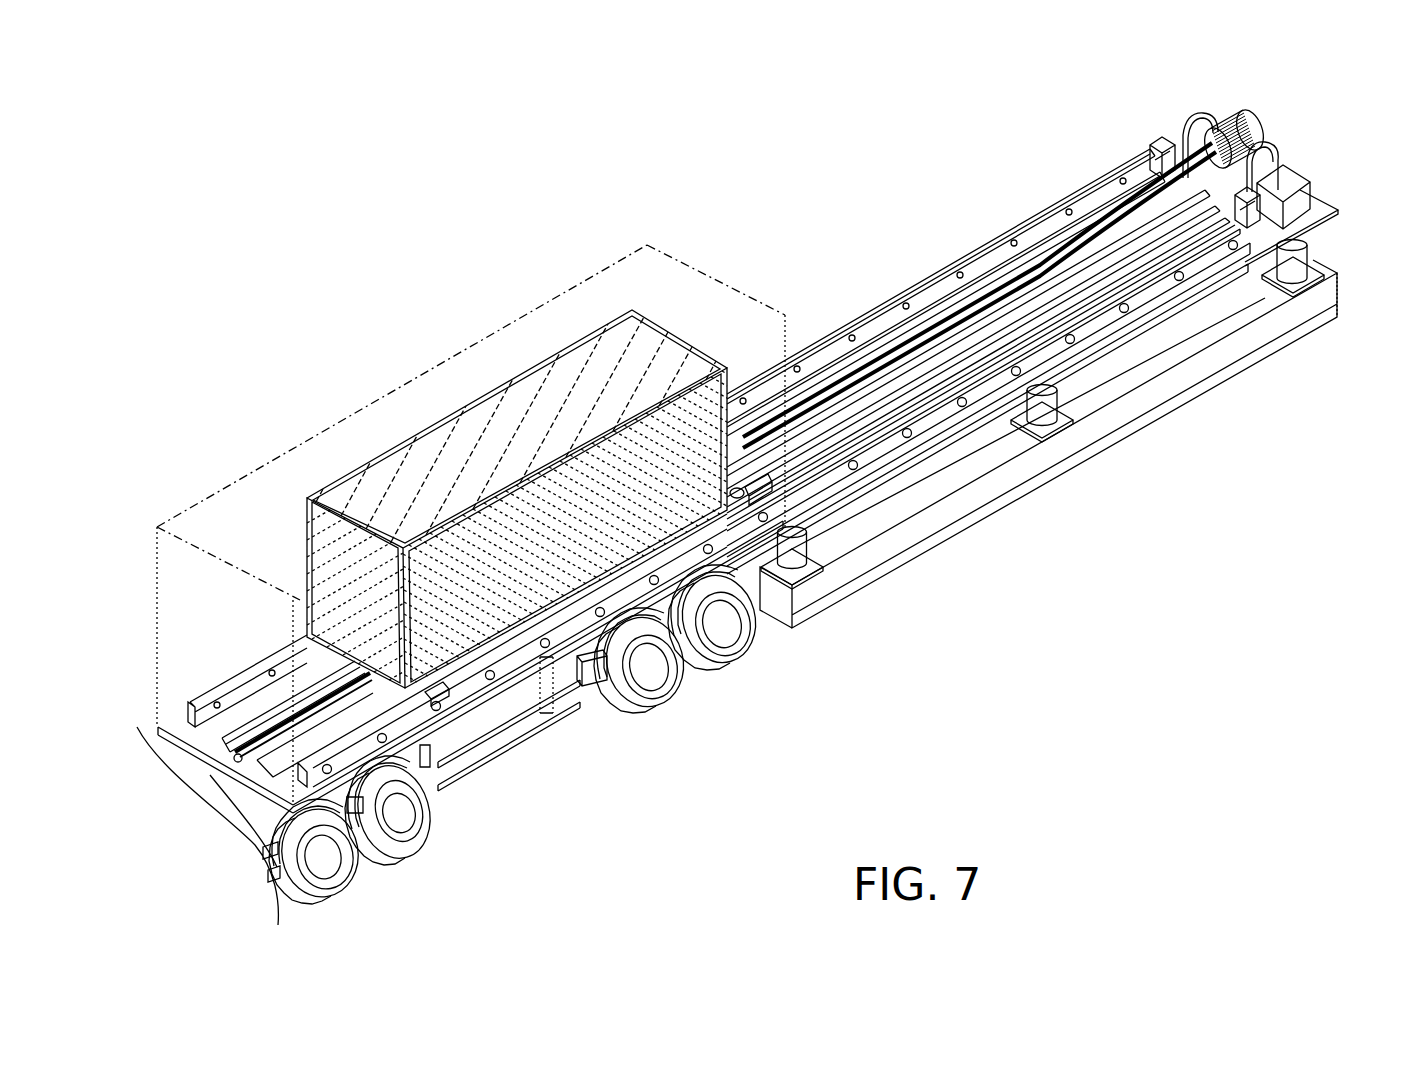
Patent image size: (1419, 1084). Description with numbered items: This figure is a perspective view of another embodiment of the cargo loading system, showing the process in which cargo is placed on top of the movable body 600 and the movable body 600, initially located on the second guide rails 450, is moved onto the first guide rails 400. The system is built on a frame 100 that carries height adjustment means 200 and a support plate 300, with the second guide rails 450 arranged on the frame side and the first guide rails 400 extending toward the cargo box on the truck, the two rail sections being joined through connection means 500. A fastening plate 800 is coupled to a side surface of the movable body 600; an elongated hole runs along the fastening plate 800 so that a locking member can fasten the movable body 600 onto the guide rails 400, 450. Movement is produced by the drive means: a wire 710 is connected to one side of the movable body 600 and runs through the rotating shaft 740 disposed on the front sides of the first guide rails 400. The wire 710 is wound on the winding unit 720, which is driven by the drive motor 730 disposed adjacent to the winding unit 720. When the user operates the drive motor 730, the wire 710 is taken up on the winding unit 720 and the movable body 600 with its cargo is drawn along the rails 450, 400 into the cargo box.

The frame 100 is at (928, 533).
The height adjustment means 200 is at (1060, 423).
The support plate 300 is at (1243, 252).
The first guide rails 400 is at (248, 713).
The second guide rails 450 is at (857, 360).
The connection means 500 is at (750, 478).
The movable body 600 is at (580, 665).
The fastening plate 800 is at (445, 693).
The wire 710 is at (1188, 143).
The winding unit 720 is at (1250, 132).
The drive motor 730 is at (1287, 177).
The rotating shaft 740 is at (208, 777).